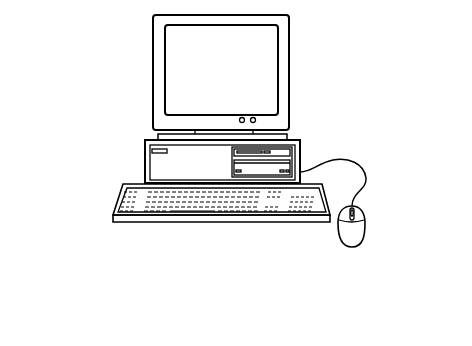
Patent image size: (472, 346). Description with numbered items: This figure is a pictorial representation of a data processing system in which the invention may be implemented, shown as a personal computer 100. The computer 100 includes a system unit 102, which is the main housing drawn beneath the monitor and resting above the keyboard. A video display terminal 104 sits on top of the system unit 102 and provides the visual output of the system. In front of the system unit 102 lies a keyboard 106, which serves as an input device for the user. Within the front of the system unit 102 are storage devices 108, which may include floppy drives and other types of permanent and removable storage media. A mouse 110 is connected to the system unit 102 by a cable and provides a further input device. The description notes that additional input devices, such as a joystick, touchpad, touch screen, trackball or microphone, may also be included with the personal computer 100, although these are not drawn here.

The computer 100 is at (90, 61).
The system unit 102 is at (145, 158).
The video display terminal 104 is at (289, 72).
The keyboard 106 is at (137, 225).
The storage devices 108 is at (272, 152).
The mouse 110 is at (352, 247).